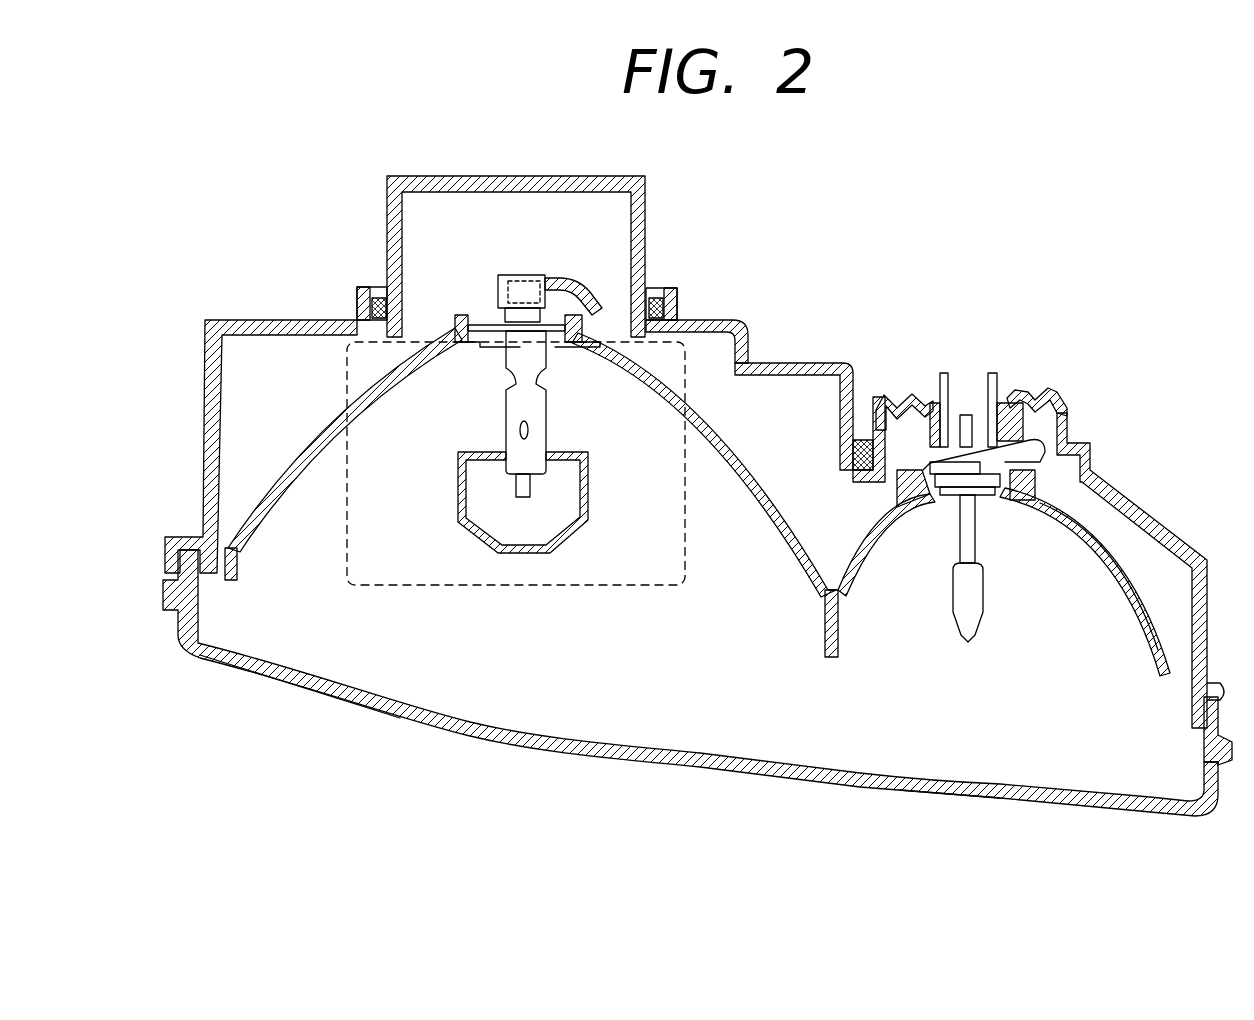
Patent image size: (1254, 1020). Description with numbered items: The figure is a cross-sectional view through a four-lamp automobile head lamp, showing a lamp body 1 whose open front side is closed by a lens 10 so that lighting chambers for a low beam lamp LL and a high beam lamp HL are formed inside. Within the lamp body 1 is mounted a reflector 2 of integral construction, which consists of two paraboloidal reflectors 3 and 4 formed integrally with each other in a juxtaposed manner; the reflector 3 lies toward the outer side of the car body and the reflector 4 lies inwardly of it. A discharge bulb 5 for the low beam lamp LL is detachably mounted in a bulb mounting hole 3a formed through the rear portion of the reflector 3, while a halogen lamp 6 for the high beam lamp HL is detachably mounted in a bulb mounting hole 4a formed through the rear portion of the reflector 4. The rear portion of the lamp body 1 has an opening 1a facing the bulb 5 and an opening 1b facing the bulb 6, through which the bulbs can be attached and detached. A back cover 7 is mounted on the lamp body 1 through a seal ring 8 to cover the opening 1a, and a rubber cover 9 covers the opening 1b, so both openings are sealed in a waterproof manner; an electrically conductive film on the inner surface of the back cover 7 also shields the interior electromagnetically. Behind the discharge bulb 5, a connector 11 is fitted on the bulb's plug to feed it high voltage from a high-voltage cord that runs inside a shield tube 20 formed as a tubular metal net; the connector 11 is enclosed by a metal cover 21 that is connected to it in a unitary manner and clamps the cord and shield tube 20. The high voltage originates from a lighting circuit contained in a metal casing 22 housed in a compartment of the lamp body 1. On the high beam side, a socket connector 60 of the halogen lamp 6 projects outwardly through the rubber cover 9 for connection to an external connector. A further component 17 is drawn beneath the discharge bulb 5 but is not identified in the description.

The lamp body 1 is at (790, 375).
The opening 1a is at (700, 330).
The opening 1b is at (1085, 470).
The reflector 2 is at (1105, 530).
The reflector 3 is at (742, 480).
The bulb mounting hole 3a is at (455, 345).
The reflector 4 is at (1130, 600).
The bulb mounting hole 4a is at (945, 505).
The discharge bulb 5 is at (512, 462).
The halogen lamp 6 is at (955, 592).
The back cover 7 is at (470, 176).
The seal ring 8 is at (665, 305).
The rubber cover 9 is at (1030, 395).
The lens 10 is at (705, 768).
The connector 11 is at (528, 288).
The shade 17 is at (575, 545).
The shield tube 20 is at (578, 285).
The metal cover 21 is at (500, 275).
The metal casing 22 is at (750, 348).
The socket connector 60 is at (968, 385).
The low beam lamp LL is at (395, 728).
The high beam lamp HL is at (980, 815).